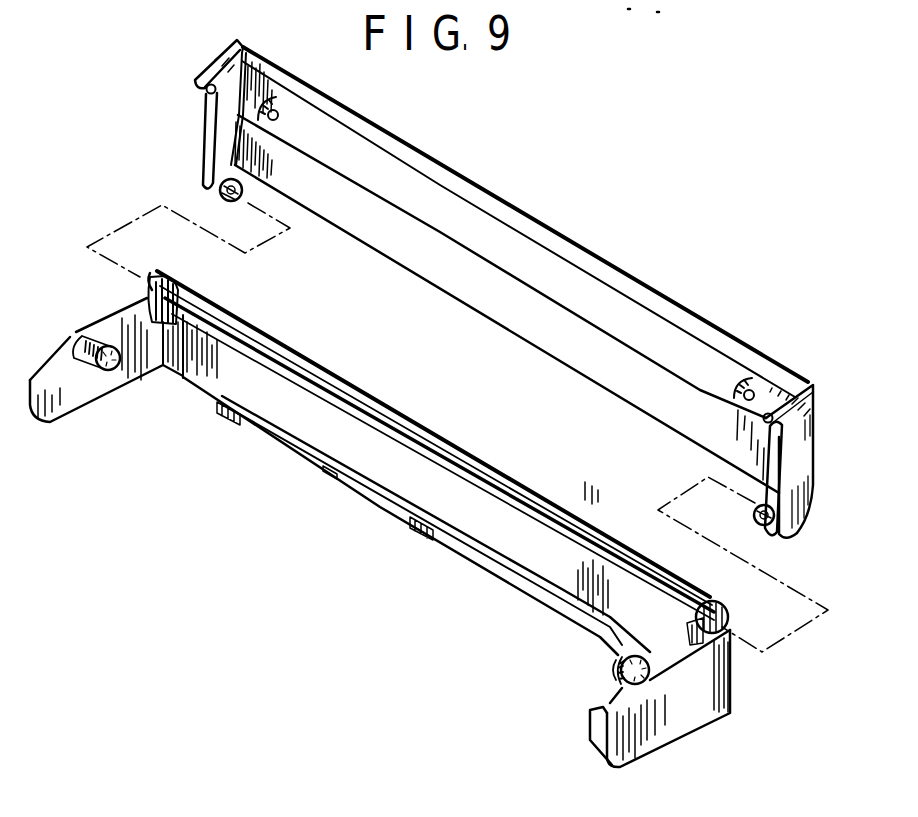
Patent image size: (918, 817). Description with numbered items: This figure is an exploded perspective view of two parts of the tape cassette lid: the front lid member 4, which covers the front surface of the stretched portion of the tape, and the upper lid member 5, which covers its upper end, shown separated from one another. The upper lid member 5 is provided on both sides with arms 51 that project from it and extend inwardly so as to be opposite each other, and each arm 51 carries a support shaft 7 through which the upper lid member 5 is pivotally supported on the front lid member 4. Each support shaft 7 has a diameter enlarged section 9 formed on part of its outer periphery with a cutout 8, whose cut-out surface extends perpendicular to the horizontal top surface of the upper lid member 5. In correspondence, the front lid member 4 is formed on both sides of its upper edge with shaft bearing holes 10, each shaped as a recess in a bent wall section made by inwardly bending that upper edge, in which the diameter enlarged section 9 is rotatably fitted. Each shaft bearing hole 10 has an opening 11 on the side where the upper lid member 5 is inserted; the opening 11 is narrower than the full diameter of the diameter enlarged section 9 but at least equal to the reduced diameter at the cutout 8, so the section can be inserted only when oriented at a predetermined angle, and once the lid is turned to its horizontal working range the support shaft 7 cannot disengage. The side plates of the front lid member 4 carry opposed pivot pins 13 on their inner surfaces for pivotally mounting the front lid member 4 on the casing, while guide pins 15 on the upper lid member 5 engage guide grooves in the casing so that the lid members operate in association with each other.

The front lid member 4 is at (526, 493).
The upper lid member 5 is at (535, 231).
The support shaft 7 is at (205, 190).
The cutout 8 is at (262, 180).
The diameter enlarged section 9 is at (233, 202).
The shaft bearing hole 10 is at (138, 301).
The opening 11 is at (137, 288).
The pivot pin 13 is at (114, 373).
The guide pin 15 is at (208, 93).
The arm 51 is at (208, 174).